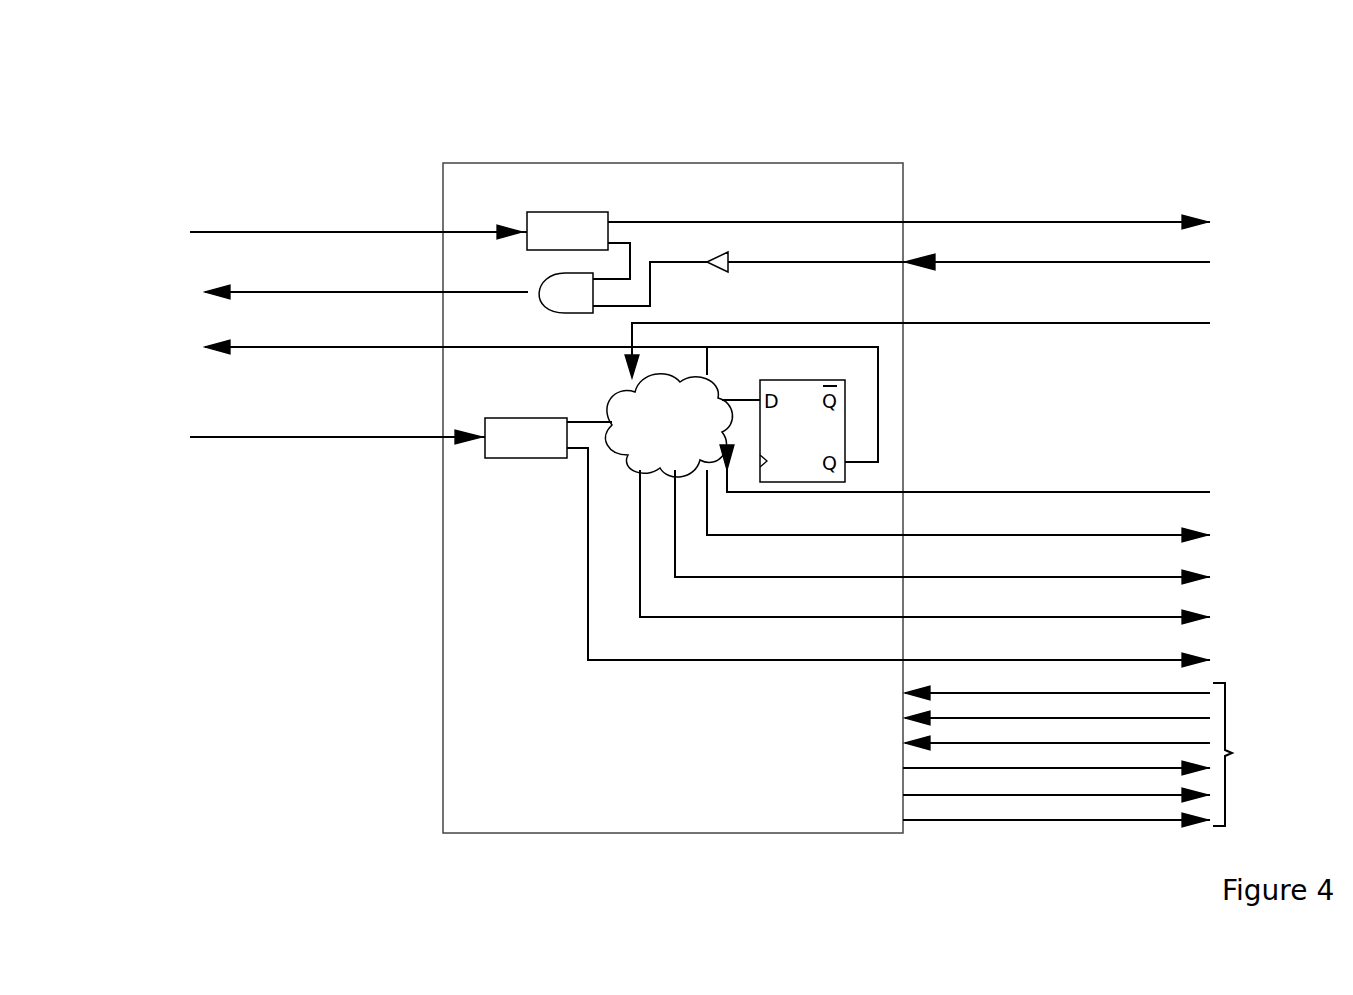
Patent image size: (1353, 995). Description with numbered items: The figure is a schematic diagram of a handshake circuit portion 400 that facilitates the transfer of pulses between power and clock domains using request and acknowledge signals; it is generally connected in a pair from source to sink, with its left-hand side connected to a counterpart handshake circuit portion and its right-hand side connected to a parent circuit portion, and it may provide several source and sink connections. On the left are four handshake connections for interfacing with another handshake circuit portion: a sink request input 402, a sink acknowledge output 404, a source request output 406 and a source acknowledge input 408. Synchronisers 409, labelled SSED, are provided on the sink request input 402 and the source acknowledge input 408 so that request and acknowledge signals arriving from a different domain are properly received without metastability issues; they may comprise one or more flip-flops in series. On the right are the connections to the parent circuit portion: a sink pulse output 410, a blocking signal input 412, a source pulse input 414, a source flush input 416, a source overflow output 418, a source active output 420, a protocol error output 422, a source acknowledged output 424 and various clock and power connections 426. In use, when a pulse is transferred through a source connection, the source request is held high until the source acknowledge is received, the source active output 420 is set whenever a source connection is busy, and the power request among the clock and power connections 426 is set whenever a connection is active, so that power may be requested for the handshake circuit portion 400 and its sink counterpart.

The handshake circuit portion 400 is at (436, 128).
The sink request input 402 is at (230, 220).
The sink acknowledge output 404 is at (202, 290).
The source request output 406 is at (205, 346).
The source acknowledge input 408 is at (205, 436).
The synchronisers 409 is at (511, 418).
The sink pulse output 410 is at (1190, 216).
The blocking signal input 412 is at (1210, 262).
The source pulse input 414 is at (1185, 324).
The source flush input 416 is at (1190, 492).
The source overflow output 418 is at (1195, 533).
The source active output 420 is at (1195, 575).
The protocol error output 422 is at (1195, 616).
The source acknowledged output 424 is at (1195, 658).
The clock and power connections 426 is at (1233, 754).